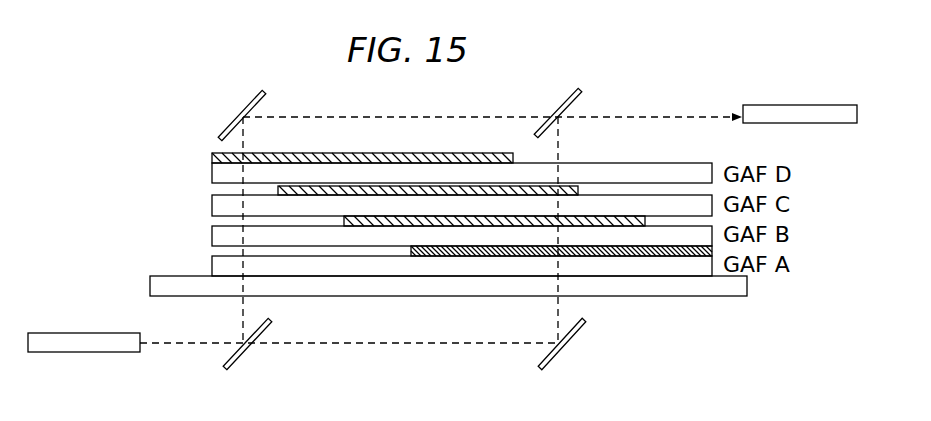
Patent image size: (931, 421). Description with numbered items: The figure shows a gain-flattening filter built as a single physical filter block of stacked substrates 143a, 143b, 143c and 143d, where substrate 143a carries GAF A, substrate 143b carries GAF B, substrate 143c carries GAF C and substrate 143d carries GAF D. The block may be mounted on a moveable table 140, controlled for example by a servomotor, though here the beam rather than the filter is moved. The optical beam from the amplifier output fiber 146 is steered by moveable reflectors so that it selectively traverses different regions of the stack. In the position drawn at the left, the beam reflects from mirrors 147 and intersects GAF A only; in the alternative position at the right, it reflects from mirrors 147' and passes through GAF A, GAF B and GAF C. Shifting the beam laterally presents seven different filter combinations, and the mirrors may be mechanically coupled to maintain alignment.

The moveable table 140 is at (150, 281).
The substrate 143a is at (431, 261).
The substrate 143b is at (431, 231).
The substrate 143c is at (431, 201).
The substrate 143d is at (431, 170).
The amplifier output fiber 146 is at (100, 333).
The mirrors 147 is at (515, 216).
The mirrors 147' is at (570, 221).